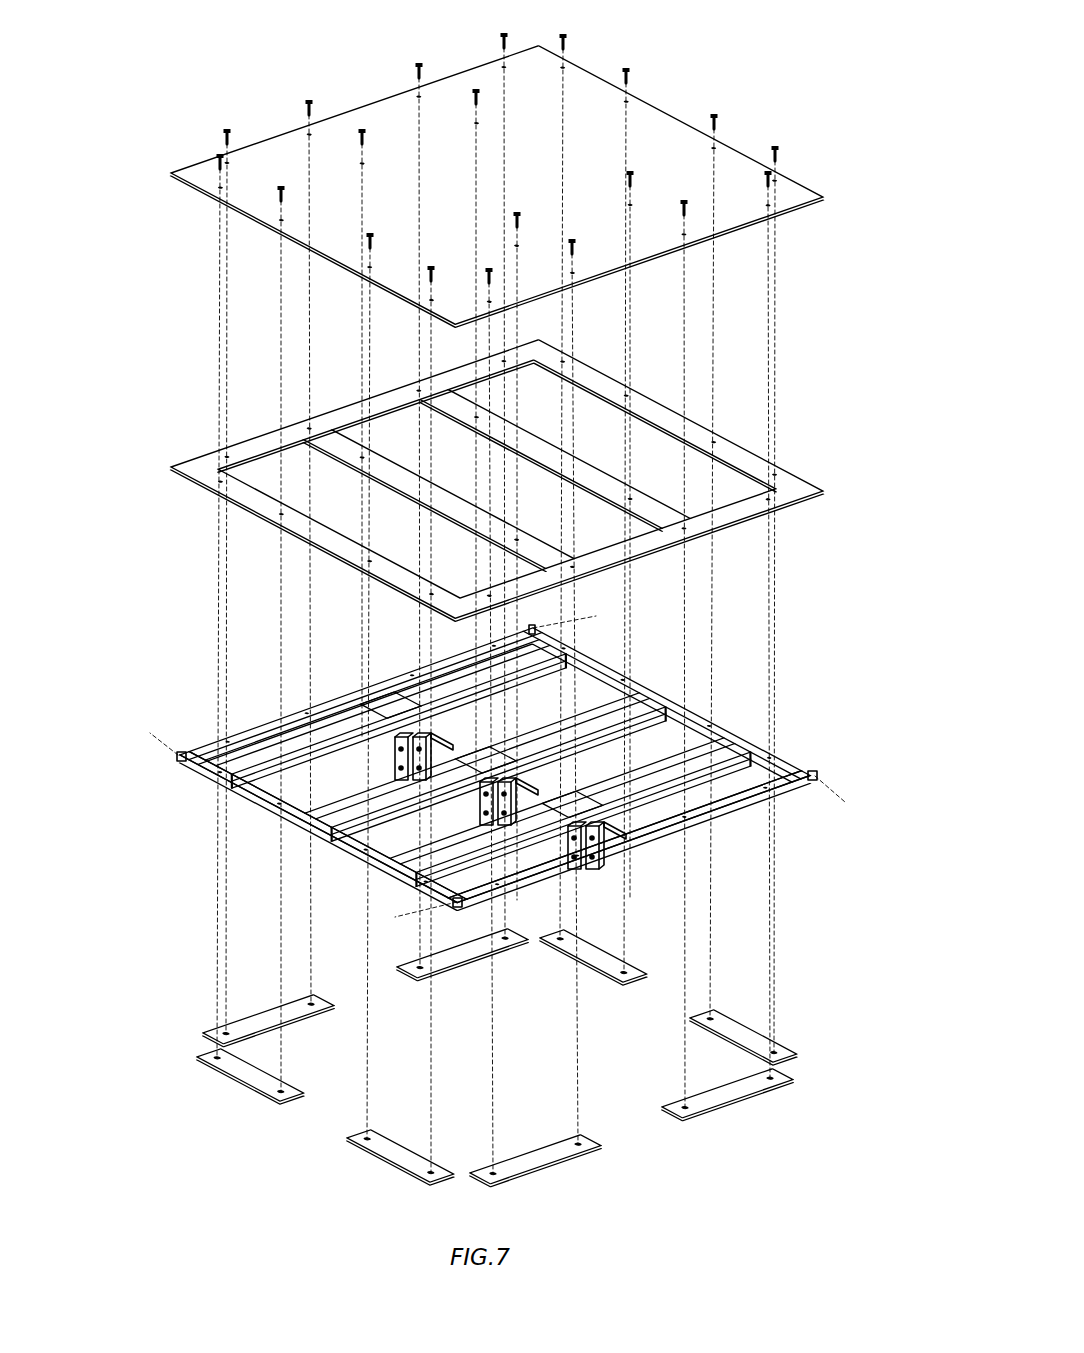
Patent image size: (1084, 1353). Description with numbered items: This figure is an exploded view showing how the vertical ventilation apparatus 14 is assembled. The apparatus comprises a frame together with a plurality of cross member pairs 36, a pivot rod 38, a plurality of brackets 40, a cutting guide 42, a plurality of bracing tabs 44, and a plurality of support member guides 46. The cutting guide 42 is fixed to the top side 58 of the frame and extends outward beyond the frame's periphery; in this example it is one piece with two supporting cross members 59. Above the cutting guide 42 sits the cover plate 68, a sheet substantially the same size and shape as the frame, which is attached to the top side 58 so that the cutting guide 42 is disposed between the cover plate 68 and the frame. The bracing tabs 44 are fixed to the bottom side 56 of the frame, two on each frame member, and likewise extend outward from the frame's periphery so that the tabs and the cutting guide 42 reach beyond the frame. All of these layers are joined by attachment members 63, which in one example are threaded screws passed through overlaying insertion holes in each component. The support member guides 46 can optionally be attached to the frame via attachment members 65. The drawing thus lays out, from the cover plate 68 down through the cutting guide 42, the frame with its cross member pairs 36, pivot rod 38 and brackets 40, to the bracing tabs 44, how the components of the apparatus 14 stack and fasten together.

The vertical ventilation apparatus 14 is at (114, 176).
The top side 58 is at (668, 70).
The cover plate 68 is at (652, 127).
The attachment members 63 is at (784, 148).
The cutting guide 42 is at (730, 508).
The supporting cross members 59 is at (345, 434).
The attachment members 65 is at (600, 612).
The support member guides 46 is at (178, 762).
The pivot rod 38 is at (630, 818).
The cross member pairs 36 is at (242, 770).
The brackets 40 is at (426, 757).
The bracing tabs 44 is at (256, 1078).
The bottom side 56 is at (358, 1194).